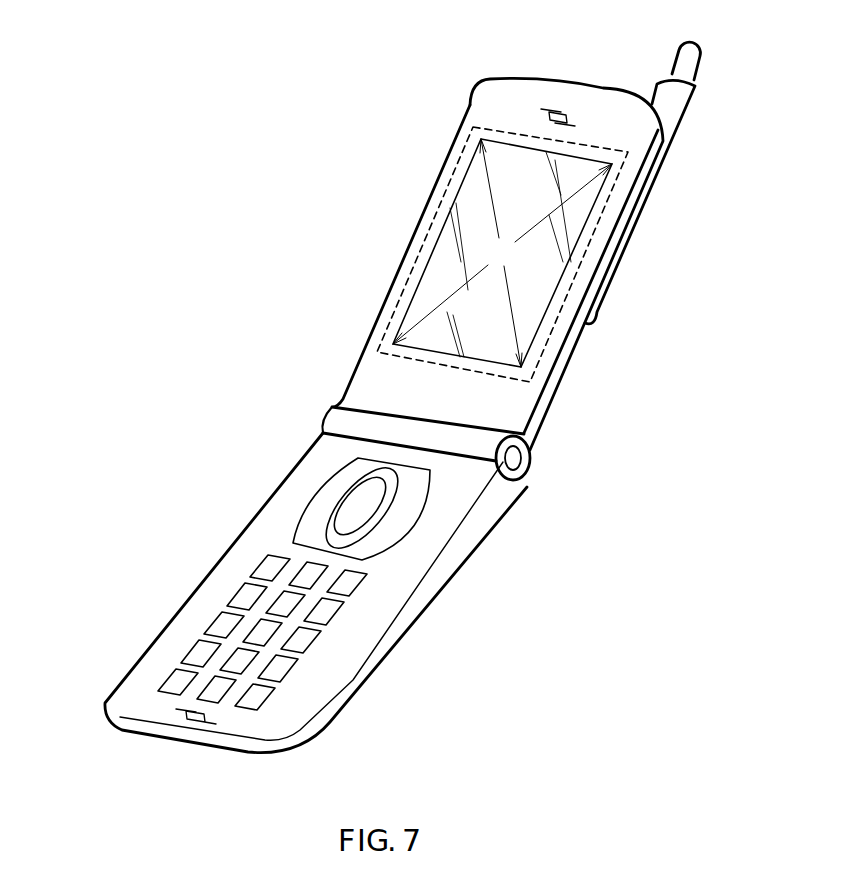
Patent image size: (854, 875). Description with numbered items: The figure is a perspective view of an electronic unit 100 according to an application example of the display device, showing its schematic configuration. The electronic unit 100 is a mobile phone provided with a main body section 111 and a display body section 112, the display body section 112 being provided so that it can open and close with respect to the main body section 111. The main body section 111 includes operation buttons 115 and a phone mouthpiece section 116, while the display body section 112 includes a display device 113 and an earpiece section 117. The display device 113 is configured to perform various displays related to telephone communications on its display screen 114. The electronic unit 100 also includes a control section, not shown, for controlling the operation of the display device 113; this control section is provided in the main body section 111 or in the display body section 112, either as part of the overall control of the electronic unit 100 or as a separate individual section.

The electronic unit 100 is at (404, 80).
The main body section 111 is at (293, 428).
The display body section 112 is at (733, 56).
The display device 113 is at (431, 237).
The display screen 114 is at (502, 253).
The operation buttons 115 is at (217, 690).
The phone mouthpiece section 116 is at (187, 719).
The earpiece section 117 is at (552, 108).